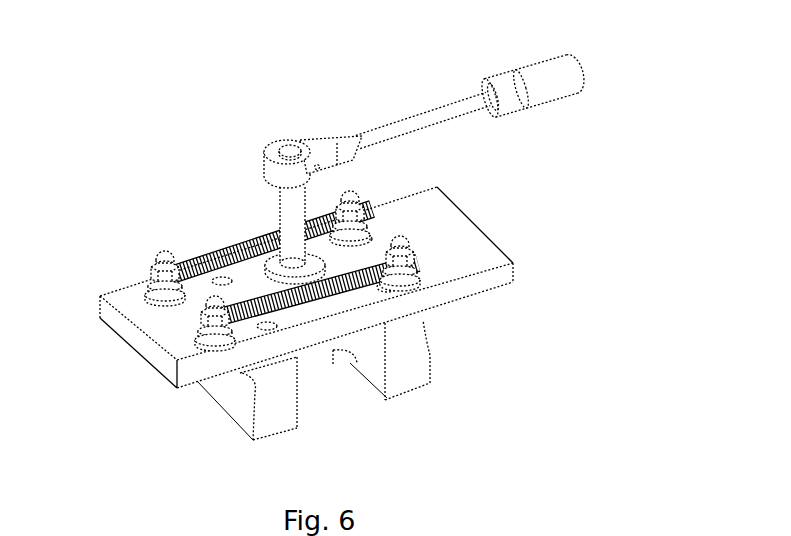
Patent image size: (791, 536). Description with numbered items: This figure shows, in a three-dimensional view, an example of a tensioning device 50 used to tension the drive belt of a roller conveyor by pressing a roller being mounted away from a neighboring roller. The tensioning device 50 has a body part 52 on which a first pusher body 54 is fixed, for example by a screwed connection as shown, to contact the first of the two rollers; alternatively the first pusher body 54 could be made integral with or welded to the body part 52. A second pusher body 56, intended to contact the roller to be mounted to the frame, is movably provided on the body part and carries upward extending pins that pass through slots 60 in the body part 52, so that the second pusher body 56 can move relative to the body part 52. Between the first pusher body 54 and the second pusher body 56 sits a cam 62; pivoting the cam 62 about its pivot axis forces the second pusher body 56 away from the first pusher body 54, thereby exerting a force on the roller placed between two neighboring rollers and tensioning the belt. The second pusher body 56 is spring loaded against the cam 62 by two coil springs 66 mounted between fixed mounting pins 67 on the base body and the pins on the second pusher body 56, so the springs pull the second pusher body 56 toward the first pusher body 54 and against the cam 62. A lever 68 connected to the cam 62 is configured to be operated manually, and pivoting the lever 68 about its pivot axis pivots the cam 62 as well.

The tensioning device 50 is at (128, 88).
The body part 52 is at (463, 230).
The first pusher body 54 is at (277, 420).
The second pusher body 56 is at (408, 377).
The slots 60 is at (373, 292).
The cam 62 is at (322, 368).
The coil springs 66 is at (231, 250).
The mounting pins 67 is at (162, 278).
The lever 68 is at (410, 80).